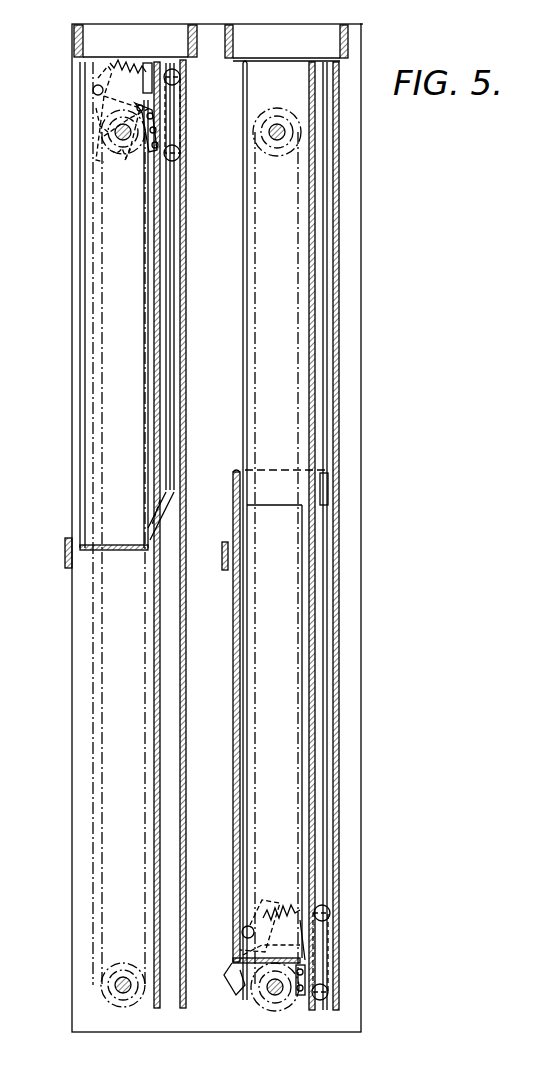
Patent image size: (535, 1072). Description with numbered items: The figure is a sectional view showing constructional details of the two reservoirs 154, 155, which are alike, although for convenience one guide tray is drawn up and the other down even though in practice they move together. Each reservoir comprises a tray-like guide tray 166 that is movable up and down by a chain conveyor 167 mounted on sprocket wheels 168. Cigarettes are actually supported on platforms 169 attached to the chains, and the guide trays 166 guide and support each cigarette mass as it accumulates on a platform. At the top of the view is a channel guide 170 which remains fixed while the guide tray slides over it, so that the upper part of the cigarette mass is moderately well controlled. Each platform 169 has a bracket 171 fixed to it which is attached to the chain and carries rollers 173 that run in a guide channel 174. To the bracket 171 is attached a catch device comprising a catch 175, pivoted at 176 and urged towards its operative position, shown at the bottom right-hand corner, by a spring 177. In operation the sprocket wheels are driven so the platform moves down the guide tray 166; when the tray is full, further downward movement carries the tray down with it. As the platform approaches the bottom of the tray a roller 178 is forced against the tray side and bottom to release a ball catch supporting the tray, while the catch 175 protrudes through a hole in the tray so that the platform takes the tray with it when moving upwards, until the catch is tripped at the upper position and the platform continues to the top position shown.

The reservoir 154 is at (188, 778).
The reservoir 155 is at (363, 556).
The guide tray 166 is at (85, 523).
The chain conveyor 167 is at (150, 233).
The sprocket wheels 168 is at (130, 166).
The platform 169 is at (140, 64).
The channel guide 170 is at (243, 338).
The bracket 171 is at (98, 118).
The rollers 173 is at (182, 80).
The guide channel 174 is at (168, 738).
The catch 175 is at (98, 130).
The pivot 176 is at (96, 88).
The spring 177 is at (130, 62).
The roller 178 is at (98, 104).